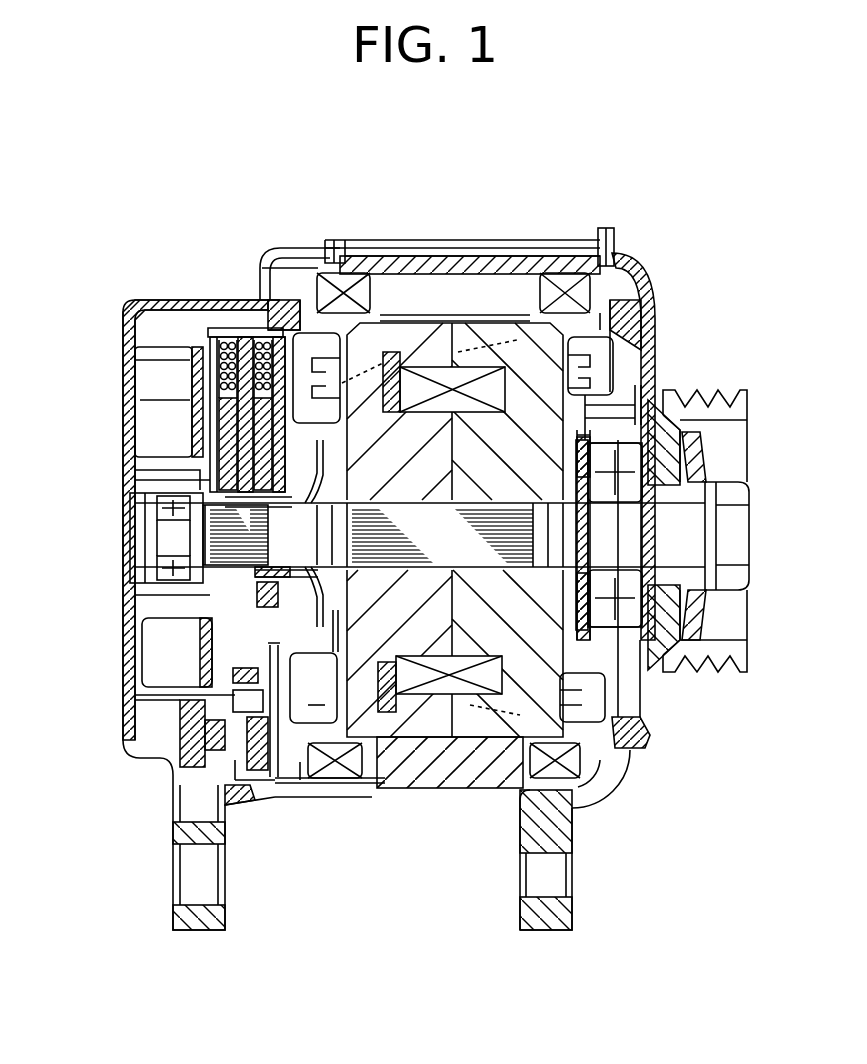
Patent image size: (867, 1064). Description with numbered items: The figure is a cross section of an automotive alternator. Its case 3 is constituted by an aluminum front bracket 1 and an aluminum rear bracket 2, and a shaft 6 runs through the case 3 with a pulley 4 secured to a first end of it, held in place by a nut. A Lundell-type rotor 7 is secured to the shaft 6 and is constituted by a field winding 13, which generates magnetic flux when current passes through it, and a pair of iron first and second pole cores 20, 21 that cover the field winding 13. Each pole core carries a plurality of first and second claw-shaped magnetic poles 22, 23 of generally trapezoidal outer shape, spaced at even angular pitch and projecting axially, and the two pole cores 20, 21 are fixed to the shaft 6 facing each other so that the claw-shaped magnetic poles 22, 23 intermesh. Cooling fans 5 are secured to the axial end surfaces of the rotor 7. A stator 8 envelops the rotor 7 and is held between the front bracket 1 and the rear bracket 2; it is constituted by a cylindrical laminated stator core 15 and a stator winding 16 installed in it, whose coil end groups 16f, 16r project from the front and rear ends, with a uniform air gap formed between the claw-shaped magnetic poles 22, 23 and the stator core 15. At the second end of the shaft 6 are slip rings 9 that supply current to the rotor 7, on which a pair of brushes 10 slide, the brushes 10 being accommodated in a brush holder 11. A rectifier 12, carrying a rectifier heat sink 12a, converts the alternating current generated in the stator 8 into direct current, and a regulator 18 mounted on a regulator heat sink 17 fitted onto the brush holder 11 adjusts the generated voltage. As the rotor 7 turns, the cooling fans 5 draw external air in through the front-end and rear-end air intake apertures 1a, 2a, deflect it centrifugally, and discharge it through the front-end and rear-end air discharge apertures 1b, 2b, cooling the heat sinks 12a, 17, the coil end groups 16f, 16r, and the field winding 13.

The front bracket 1 is at (663, 742).
The front-end air intake aperture 1a is at (643, 373).
The front-end air discharge aperture 1b is at (625, 275).
The rear bracket 2 is at (156, 790).
The rear-end air intake aperture 2a is at (118, 433).
The rear-end air discharge aperture 2b is at (292, 252).
The case 3 is at (633, 763).
The pulley 4 is at (708, 672).
The cooling fans 5 is at (616, 358).
The shaft 6 is at (687, 538).
The rotor 7 is at (522, 184).
The stator 8 is at (456, 850).
The slip rings 9 is at (138, 496).
The brushes 10 is at (183, 425).
The brush holder 11 is at (263, 327).
The rectifier 12 is at (182, 696).
The rectifier heat sink 12a is at (182, 657).
The field winding 13 is at (455, 318).
The stator core 15 is at (456, 792).
The stator winding 16 is at (385, 792).
The front-end coil end group 16f is at (562, 278).
The rear-end coil end group 16r is at (335, 280).
The regulator heat sink 17 is at (165, 390).
The regulator 18 is at (160, 352).
The first pole core 20 is at (527, 355).
The second pole core 21 is at (430, 330).
The first claw-shaped magnetic poles 22 is at (477, 723).
The second claw-shaped magnetic poles 23 is at (330, 790).